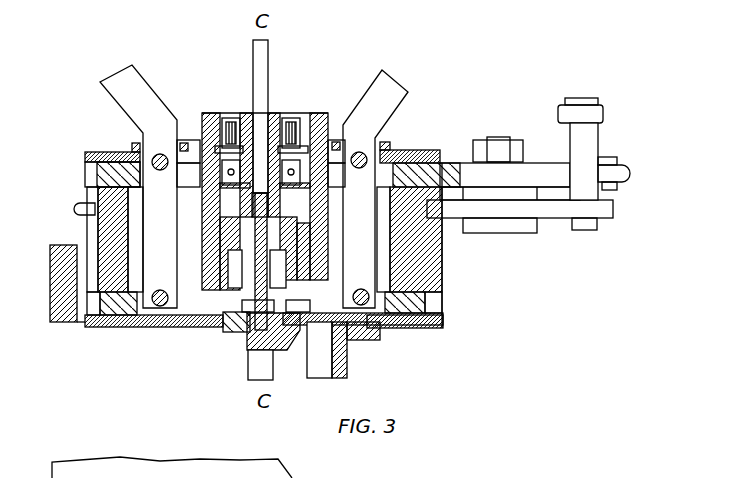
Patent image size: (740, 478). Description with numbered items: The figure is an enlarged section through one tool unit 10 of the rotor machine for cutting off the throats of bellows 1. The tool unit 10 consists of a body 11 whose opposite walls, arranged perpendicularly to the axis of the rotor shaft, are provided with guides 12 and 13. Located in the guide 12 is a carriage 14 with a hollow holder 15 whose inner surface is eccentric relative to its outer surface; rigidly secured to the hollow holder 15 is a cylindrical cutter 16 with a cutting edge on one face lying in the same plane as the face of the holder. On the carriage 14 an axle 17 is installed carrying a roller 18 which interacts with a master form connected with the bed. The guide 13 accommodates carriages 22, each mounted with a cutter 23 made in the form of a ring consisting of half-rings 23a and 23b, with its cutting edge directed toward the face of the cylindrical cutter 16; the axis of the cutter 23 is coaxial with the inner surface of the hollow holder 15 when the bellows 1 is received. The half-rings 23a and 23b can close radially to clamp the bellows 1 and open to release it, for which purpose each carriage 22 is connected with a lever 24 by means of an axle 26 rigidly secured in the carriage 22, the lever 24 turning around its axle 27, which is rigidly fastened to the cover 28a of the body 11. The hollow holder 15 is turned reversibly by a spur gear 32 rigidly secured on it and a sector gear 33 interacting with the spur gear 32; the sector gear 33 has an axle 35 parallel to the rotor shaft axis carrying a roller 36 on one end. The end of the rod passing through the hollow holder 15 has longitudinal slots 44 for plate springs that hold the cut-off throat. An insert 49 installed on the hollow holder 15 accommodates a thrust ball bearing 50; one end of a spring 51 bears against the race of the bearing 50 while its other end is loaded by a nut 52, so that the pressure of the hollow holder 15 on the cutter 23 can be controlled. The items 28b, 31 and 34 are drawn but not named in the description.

The bellows 1 is at (247, 327).
The tool unit 10 is at (283, 108).
The body 11 is at (438, 253).
The guide 12 is at (90, 167).
The guide 13 is at (438, 302).
The carriage 14 is at (237, 205).
The hollow holder 15 is at (245, 248).
The cylindrical cutter 16 is at (240, 273).
The axle 17 is at (617, 157).
The roller 18 is at (632, 171).
The carriage 22 is at (106, 330).
The cutter 23 is at (222, 330).
The half-ring 23a is at (218, 320).
The half-ring 23b is at (325, 278).
The lever 24 is at (150, 105).
The axle 26 is at (370, 292).
The axle 27 is at (362, 170).
The cover 28a is at (110, 152).
The plate 28b is at (437, 330).
The block 31 is at (294, 330).
The spur gear 32 is at (207, 197).
The sector gear 33 is at (557, 213).
The bolt 34 is at (502, 138).
The axle 35 is at (612, 200).
The roller 36 is at (603, 113).
The longitudinal slots 44 is at (263, 361).
The insert 49 is at (330, 124).
The thrust ball bearing 50 is at (216, 128).
The spring 51 is at (308, 113).
The nut 52 is at (232, 118).